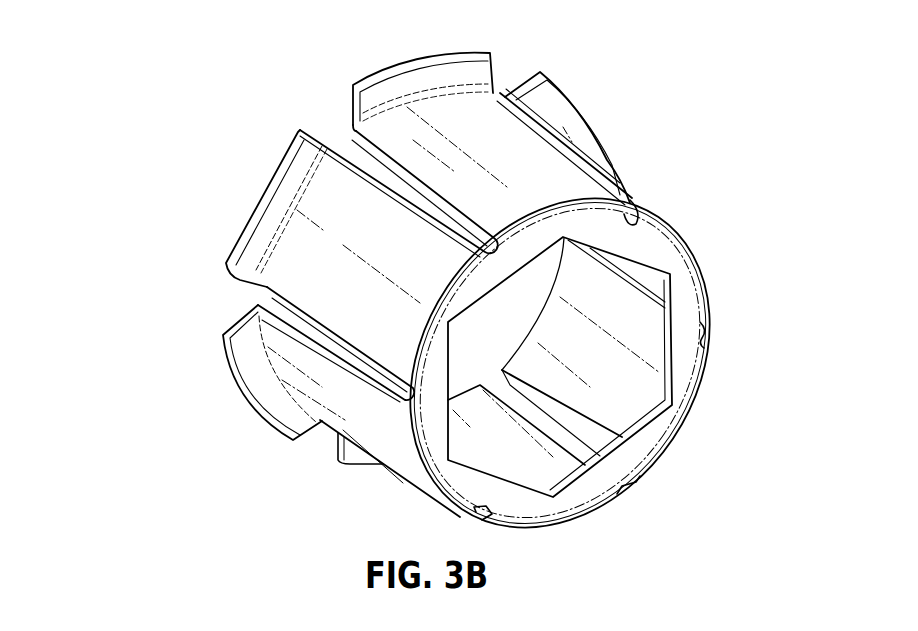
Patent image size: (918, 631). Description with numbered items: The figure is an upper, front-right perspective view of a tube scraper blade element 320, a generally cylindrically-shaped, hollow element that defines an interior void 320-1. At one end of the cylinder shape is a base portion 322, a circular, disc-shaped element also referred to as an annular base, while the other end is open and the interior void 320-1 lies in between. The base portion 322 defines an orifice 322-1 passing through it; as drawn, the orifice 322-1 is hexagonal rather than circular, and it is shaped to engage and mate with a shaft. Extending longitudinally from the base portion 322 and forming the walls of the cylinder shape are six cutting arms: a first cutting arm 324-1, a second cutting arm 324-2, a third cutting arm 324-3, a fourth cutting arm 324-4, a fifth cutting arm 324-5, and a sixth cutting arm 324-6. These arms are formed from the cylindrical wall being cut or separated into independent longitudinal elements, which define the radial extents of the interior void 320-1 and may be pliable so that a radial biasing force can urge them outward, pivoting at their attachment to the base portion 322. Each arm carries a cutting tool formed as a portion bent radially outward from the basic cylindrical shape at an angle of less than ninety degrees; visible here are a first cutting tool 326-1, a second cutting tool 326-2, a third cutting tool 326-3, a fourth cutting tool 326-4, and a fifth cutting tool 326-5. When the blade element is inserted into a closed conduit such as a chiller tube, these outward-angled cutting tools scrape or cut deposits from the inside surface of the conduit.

The tube scraper blade element 320 is at (103, 164).
The interior void 320-1 is at (318, 114).
The base portion 322 is at (692, 312).
The orifice 322-1 is at (518, 297).
The first cutting arm 324-1 is at (641, 207).
The second cutting arm 324-2 is at (527, 162).
The third cutting arm 324-3 is at (375, 301).
The fourth cutting arm 324-4 is at (387, 426).
The fifth cutting arm 324-5 is at (512, 456).
The sixth cutting arm 324-6 is at (620, 362).
The first cutting tool 326-1 is at (590, 118).
The second cutting tool 326-2 is at (412, 76).
The third cutting tool 326-3 is at (253, 206).
The fourth cutting tool 326-4 is at (240, 393).
The fifth cutting tool 326-5 is at (353, 463).